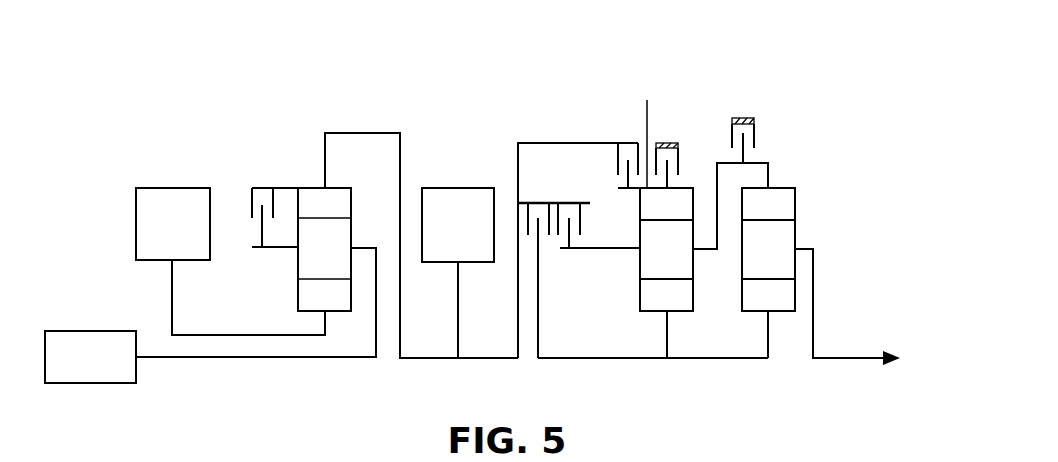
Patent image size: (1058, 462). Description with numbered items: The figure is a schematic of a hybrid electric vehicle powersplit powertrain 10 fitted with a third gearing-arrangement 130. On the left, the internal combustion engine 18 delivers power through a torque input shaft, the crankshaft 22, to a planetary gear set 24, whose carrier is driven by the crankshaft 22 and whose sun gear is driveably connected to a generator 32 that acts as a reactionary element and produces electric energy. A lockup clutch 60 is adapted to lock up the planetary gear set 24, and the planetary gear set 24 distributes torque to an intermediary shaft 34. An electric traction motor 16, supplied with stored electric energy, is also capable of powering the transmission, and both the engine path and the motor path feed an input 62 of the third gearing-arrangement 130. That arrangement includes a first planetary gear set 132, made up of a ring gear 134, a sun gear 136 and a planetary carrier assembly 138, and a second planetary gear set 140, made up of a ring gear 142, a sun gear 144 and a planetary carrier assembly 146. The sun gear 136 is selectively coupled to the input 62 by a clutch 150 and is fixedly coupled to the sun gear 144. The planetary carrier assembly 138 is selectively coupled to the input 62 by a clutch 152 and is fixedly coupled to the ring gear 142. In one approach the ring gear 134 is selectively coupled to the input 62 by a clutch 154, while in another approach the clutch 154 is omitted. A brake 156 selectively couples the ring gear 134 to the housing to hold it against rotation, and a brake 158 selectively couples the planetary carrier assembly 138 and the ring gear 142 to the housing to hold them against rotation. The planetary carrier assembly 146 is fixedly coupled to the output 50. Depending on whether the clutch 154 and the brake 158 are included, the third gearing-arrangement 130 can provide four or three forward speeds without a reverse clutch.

The powersplit powertrain 10 is at (236, 103).
The electric traction motor 16 is at (441, 187).
The internal combustion engine 18 is at (108, 330).
The crankshaft 22 is at (270, 358).
The planetary gear set 24 is at (337, 187).
The generator 32 is at (190, 187).
The intermediary shaft 34 is at (420, 358).
The output 50 is at (836, 360).
The lockup clutch 60 is at (283, 187).
The input 62 is at (488, 358).
The third gearing-arrangement 130 is at (736, 182).
The first planetary gear set 132 is at (647, 100).
The ring gear 134 is at (666, 204).
The sun gear 136 is at (666, 295).
The planetary carrier assembly 138 is at (666, 249).
The second planetary gear set 140 is at (808, 250).
The ring gear 142 is at (768, 204).
The sun gear 144 is at (768, 295).
The planetary carrier assembly 146 is at (768, 249).
The clutch 150 is at (538, 200).
The clutch 152 is at (570, 200).
The clutch 154 is at (625, 143).
The brake 156 is at (666, 143).
The brake 158 is at (743, 118).